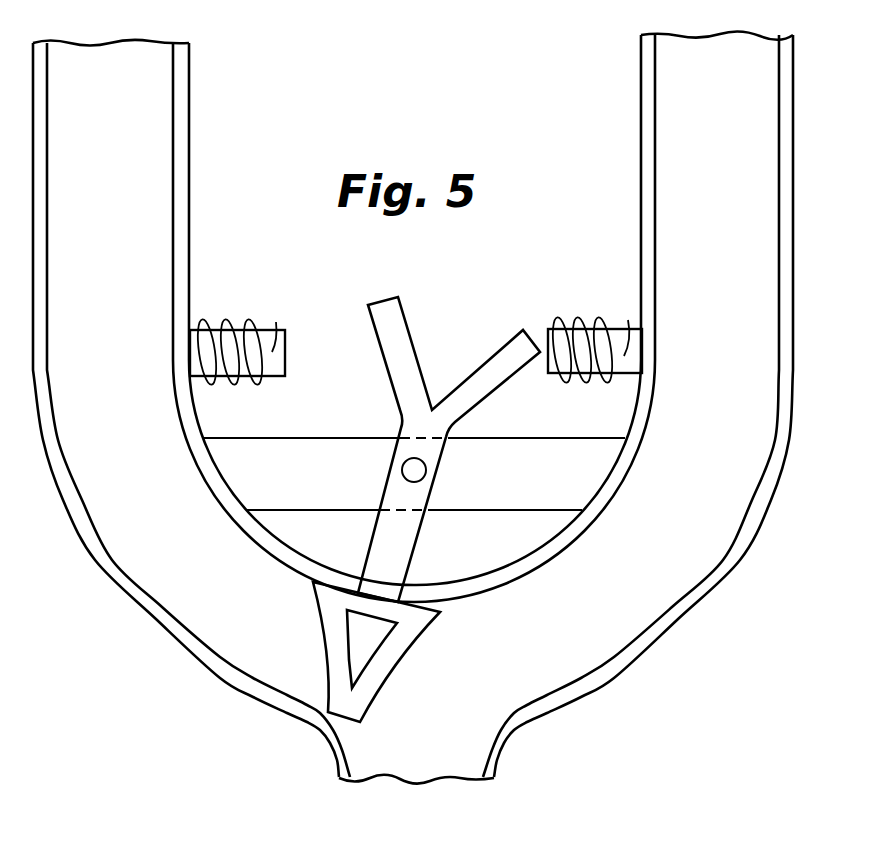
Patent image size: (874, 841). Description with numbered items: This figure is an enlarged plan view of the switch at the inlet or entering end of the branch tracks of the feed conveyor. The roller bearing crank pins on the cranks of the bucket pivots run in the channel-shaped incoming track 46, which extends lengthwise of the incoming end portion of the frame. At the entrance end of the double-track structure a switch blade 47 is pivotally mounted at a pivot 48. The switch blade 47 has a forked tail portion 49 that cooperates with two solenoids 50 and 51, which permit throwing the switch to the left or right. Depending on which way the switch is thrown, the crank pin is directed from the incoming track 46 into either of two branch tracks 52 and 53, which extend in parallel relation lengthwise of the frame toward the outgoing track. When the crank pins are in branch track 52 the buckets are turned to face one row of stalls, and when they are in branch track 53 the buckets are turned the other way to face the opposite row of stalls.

The channel-shaped track 46 is at (468, 748).
The switch blade 47 is at (402, 640).
The pivot 48 is at (426, 474).
The forked tail portion 49 is at (497, 350).
The solenoid 50 is at (270, 332).
The solenoid 51 is at (558, 329).
The branch track 52 is at (603, 404).
The branch track 53 is at (223, 408).